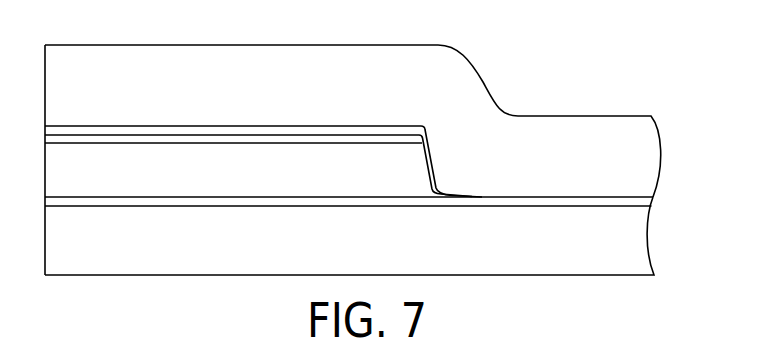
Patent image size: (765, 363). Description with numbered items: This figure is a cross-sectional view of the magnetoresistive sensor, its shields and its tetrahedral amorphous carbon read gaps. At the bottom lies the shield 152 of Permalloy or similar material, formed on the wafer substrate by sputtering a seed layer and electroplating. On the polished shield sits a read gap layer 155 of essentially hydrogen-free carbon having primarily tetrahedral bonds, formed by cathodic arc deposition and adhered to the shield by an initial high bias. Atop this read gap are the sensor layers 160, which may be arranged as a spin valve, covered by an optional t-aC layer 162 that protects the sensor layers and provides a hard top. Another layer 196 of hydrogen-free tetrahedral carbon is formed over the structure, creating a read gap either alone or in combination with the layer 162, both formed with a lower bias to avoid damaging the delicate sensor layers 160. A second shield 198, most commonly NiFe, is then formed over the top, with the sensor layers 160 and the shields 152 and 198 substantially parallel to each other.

The shield 152 is at (228, 256).
The read gap layer 155 is at (149, 200).
The sensor layers 160 is at (243, 186).
The t-aC layer 162 is at (157, 140).
The layer of hydrogen-free tetrahedral carbon 196 is at (367, 129).
The second shield 198 is at (282, 96).